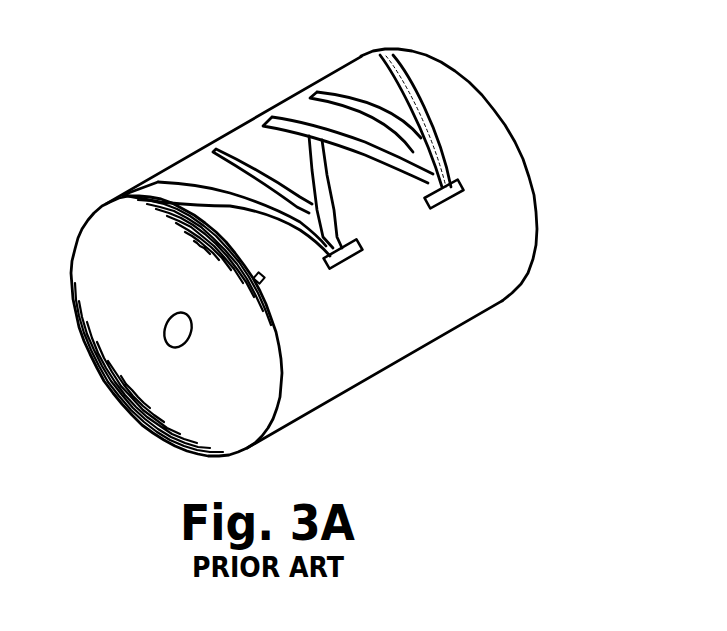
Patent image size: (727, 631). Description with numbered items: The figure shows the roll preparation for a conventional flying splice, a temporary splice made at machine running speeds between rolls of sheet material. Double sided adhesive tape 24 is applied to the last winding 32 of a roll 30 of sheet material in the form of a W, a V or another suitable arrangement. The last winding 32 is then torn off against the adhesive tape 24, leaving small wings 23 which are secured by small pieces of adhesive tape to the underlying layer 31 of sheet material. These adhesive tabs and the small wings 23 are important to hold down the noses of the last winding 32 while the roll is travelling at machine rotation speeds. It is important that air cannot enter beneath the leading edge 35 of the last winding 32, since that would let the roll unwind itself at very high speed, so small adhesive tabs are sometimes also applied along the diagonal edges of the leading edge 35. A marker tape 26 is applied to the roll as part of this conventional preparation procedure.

The small wings 23 is at (342, 268).
The double sided adhesive tape 24 is at (254, 194).
The marker tape 26 is at (260, 290).
The roll 30 is at (180, 125).
The underlying layer 31 is at (507, 230).
The last winding 32 is at (357, 60).
The leading edge 35 is at (437, 127).